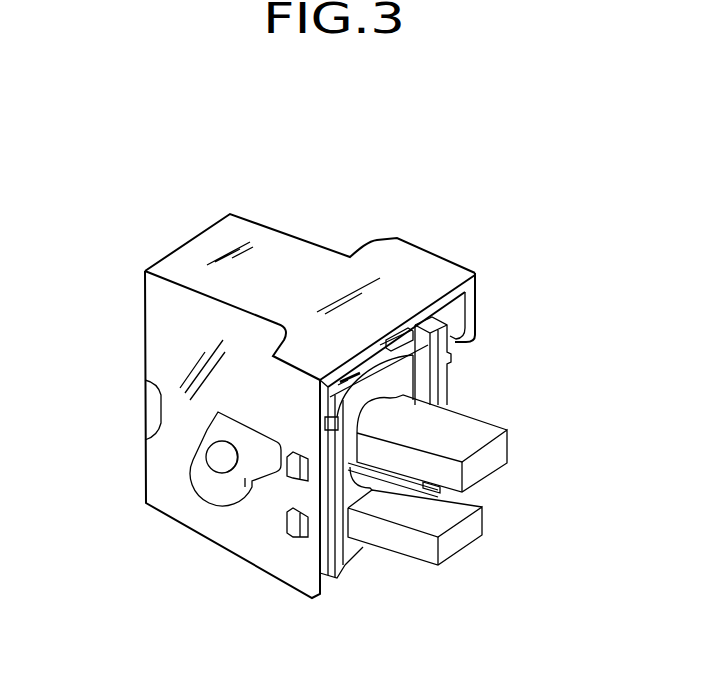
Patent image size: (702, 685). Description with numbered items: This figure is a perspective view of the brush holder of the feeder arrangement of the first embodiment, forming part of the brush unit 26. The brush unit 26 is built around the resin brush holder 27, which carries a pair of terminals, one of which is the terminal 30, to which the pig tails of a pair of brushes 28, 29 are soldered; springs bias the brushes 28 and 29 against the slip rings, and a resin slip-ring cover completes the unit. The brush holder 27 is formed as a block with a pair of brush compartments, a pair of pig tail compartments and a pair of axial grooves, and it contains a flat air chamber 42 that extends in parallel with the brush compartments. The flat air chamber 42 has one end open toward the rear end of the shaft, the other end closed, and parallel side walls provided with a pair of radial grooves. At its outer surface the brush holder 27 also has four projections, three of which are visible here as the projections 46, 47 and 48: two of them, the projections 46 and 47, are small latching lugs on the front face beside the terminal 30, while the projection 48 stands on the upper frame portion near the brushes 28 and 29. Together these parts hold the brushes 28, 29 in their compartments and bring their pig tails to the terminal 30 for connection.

The brush unit 26 is at (323, 217).
The brush holder 27 is at (267, 247).
The brush 28 is at (475, 430).
The brush 29 is at (463, 508).
The terminal 30 is at (202, 455).
The flat air chamber 42 is at (388, 343).
The projection 46 is at (290, 475).
The projection 47 is at (290, 537).
The projection 48 is at (448, 362).